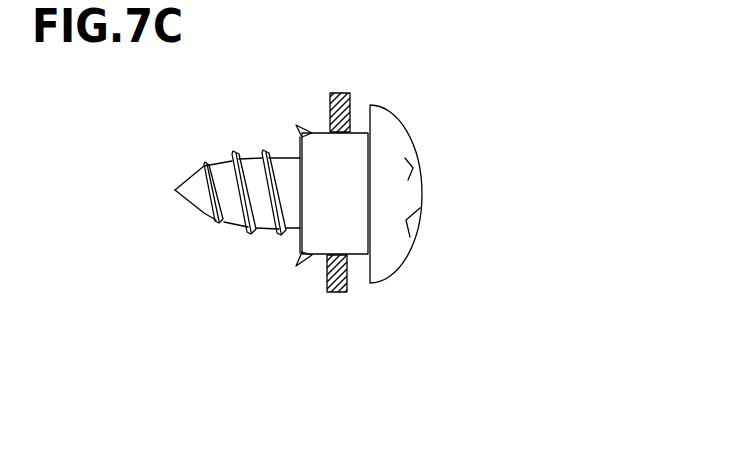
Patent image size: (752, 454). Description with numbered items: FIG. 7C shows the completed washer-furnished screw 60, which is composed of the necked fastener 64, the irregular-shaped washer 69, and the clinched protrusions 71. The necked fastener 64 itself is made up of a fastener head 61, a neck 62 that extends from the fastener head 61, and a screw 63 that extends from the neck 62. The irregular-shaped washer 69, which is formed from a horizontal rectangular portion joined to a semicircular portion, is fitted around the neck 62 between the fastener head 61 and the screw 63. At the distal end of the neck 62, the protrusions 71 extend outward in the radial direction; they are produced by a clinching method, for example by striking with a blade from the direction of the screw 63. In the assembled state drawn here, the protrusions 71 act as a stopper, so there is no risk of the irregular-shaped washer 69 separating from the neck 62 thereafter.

The washer-furnished screw 60 is at (197, 272).
The fastener head 61 is at (401, 125).
The neck 62 is at (348, 195).
The screw 63 is at (250, 165).
The necked fastener 64 is at (468, 156).
The irregular-shaped washer 69 is at (342, 312).
The protrusions 71 is at (297, 126).